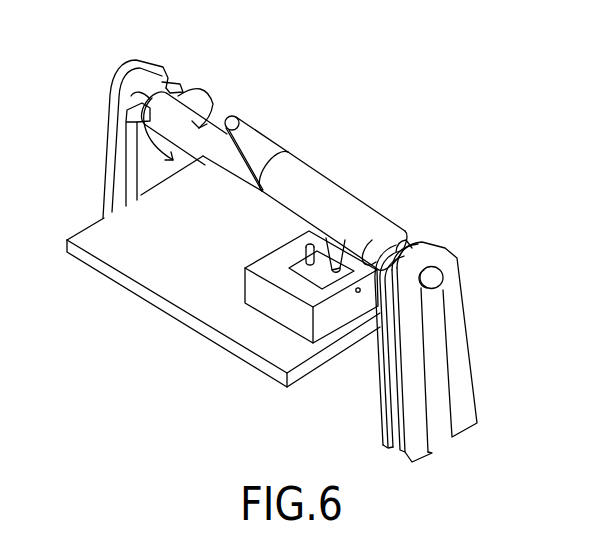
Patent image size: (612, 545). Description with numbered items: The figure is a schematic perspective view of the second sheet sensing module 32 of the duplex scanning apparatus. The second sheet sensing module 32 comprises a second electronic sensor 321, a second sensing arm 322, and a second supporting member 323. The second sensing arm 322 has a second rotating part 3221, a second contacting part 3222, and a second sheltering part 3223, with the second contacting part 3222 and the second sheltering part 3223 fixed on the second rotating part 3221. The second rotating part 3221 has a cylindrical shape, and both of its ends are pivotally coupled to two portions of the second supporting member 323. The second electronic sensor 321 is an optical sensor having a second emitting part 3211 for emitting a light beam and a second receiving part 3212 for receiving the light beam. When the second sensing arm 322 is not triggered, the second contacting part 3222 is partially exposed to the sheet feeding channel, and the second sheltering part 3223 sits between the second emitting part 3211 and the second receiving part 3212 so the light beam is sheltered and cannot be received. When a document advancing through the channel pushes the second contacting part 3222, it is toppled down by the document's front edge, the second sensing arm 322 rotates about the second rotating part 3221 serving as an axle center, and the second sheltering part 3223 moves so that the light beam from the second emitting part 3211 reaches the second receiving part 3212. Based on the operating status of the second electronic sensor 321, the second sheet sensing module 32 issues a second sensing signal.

The second sheet sensing module 32 is at (486, 108).
The second electronic sensor 321 is at (273, 302).
The second emitting part 3211 is at (408, 248).
The second receiving part 3212 is at (309, 249).
The second sensing arm 322 is at (208, 112).
The second rotating part 3221 is at (313, 196).
The second contacting part 3222 is at (259, 147).
The second sheltering part 3223 is at (358, 287).
The second supporting member 323 is at (118, 130).